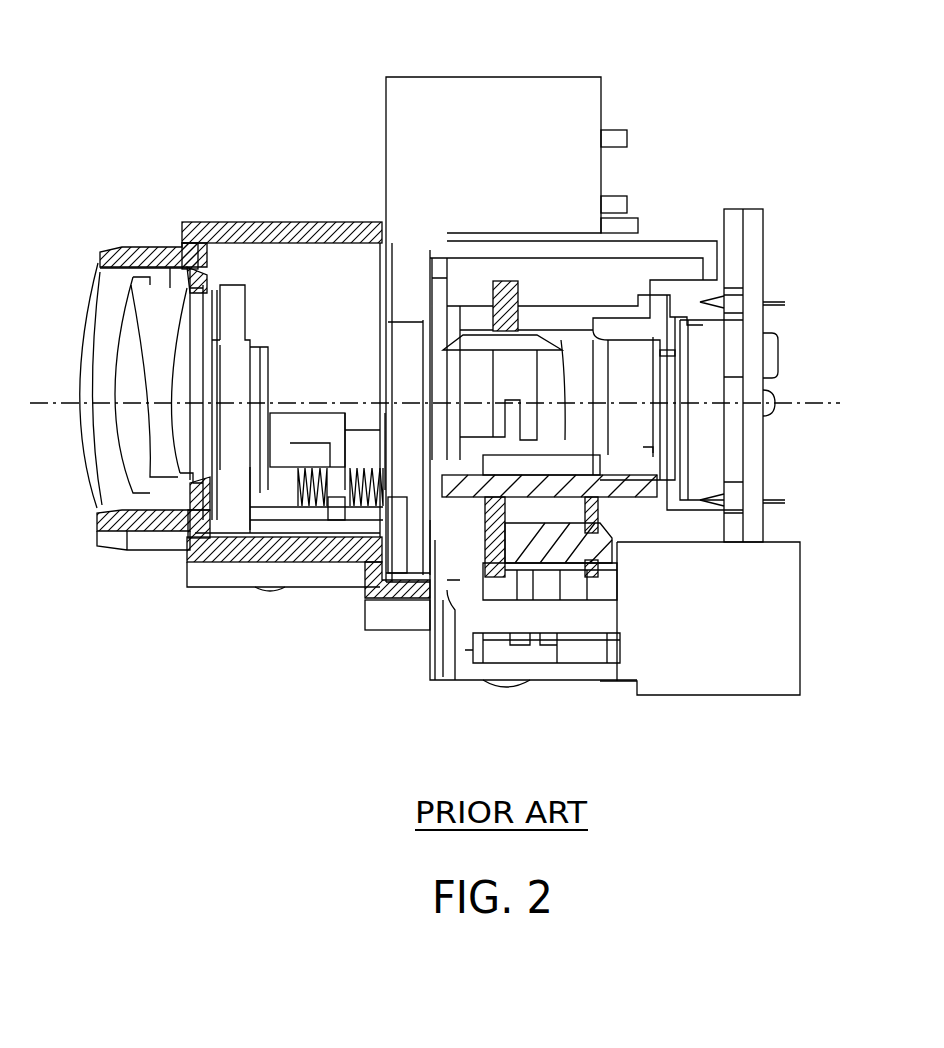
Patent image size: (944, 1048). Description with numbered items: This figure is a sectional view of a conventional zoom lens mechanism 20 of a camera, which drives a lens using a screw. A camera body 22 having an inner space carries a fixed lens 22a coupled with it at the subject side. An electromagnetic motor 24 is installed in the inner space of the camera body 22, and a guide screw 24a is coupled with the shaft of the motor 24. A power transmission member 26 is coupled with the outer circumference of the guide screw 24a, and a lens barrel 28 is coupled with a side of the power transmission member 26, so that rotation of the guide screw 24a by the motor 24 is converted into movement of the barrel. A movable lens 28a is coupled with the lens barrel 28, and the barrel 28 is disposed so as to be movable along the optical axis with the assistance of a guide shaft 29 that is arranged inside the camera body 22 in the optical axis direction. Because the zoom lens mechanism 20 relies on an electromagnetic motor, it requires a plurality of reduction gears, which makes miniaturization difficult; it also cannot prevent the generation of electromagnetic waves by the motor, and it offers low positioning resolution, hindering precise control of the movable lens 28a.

The zoom lens mechanism 20 is at (139, 195).
The camera body 22 is at (243, 222).
The fixed lens 22a is at (82, 453).
The electromagnetic motor 24 is at (783, 635).
The guide screw 24a is at (573, 627).
The power transmission member 26 is at (527, 552).
The lens barrel 28 is at (493, 281).
The movable lens 28a is at (262, 380).
The guide shaft 29 is at (580, 313).